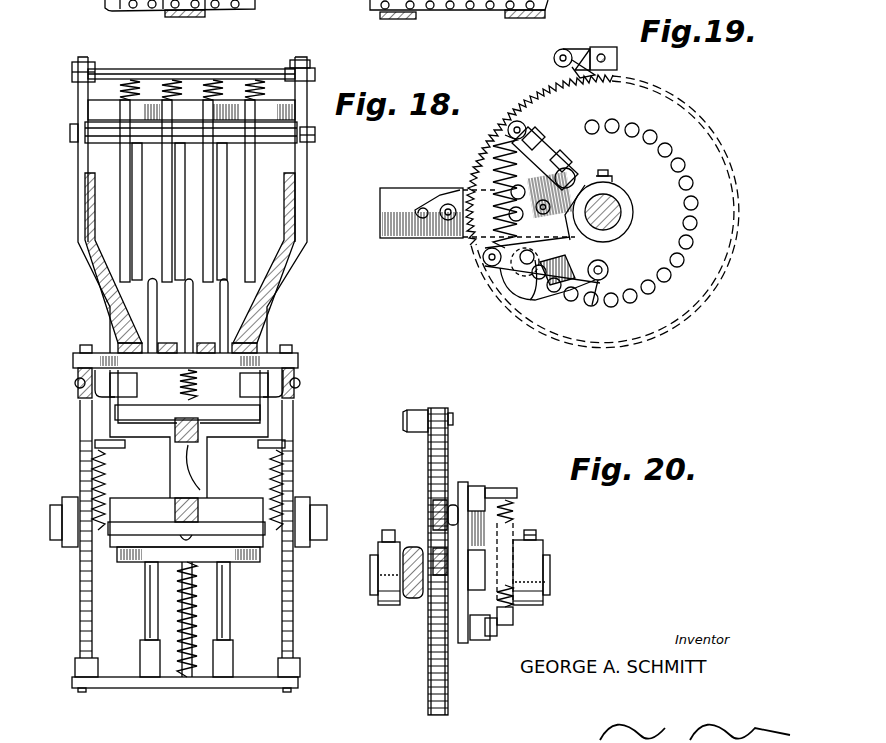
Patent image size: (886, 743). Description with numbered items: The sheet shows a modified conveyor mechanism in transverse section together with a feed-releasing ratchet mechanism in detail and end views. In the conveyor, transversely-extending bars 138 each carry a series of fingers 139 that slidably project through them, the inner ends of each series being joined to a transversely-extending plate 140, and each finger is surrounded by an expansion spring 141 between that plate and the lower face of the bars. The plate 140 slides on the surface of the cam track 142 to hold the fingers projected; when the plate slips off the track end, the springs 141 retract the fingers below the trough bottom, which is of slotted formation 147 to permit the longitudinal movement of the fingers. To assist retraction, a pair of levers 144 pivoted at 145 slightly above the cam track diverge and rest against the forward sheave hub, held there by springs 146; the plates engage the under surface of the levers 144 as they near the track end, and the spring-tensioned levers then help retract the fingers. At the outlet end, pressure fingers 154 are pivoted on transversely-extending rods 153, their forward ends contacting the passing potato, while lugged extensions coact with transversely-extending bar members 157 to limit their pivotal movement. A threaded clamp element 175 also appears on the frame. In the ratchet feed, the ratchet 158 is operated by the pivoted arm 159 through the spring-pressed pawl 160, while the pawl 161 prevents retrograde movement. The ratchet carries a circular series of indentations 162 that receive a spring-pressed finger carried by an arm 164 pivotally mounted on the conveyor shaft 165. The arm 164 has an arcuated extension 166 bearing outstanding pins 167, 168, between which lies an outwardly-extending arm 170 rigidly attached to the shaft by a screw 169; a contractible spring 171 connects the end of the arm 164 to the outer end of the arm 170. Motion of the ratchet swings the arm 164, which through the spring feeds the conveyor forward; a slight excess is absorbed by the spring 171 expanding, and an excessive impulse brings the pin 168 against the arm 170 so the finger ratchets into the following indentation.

In FIG. 18, the transversely-extending bars 138 is at (298, 362).
In FIG. 18, the fingers 139 is at (193, 312).
In FIG. 18, the transversely-extending plate 140 is at (260, 414).
In FIG. 18, the expansion spring 141 is at (260, 398).
In FIG. 18, the cam track 142 is at (203, 488).
In FIG. 18, the levers 144 is at (283, 480).
In FIG. 18, the pivot 145 is at (268, 384).
In FIG. 18, the springs 146 is at (283, 456).
In FIG. 18, the slotted formation 147 is at (258, 348).
In FIG. 18, the transversely-extending rods 153 is at (215, 84).
In FIG. 18, the fingers 154 is at (200, 176).
In FIG. 18, the transversely-extending bar members 157 is at (288, 100).
In FIG. 18, the clamp 175 is at (78, 384).
In FIG. 19, the ratchet 158 is at (510, 112).
In FIG. 20, the ratchet 158 is at (450, 455).
In FIG. 19, the pivoted arm 159 is at (415, 200).
In FIG. 20, the pivoted arm 159 is at (410, 605).
In FIG. 19, the spring-pressed pawl 160 is at (495, 152).
In FIG. 20, the spring-pressed pawl 160 is at (438, 565).
In FIG. 19, the pawl 161 is at (585, 50).
In FIG. 20, the pawl 161 is at (456, 420).
In FIG. 19, the indentations 162 is at (665, 150).
In FIG. 19, the arm 164 is at (575, 150).
In FIG. 20, the arm 164 is at (470, 485).
In FIG. 19, the conveyor shaft 165 is at (625, 205).
In FIG. 20, the conveyor shaft 165 is at (375, 565).
In FIG. 19, the arcuated extension 166 is at (606, 268).
In FIG. 19, the outstanding pin 167 is at (538, 285).
In FIG. 20, the outstanding pin 167 is at (520, 570).
In FIG. 19, the outstanding pin 168 is at (598, 300).
In FIG. 20, the outstanding pin 168 is at (498, 630).
In FIG. 19, the screw 169 is at (606, 174).
In FIG. 20, the screw 169 is at (536, 532).
In FIG. 19, the outwardly-extending arm 170 is at (505, 280).
In FIG. 20, the outwardly-extending arm 170 is at (515, 612).
In FIG. 19, the contractible spring 171 is at (485, 248).
In FIG. 20, the contractible spring 171 is at (515, 506).